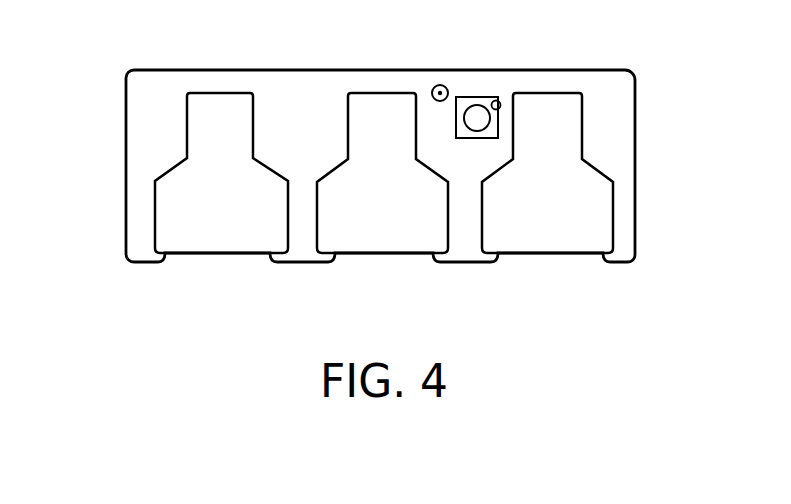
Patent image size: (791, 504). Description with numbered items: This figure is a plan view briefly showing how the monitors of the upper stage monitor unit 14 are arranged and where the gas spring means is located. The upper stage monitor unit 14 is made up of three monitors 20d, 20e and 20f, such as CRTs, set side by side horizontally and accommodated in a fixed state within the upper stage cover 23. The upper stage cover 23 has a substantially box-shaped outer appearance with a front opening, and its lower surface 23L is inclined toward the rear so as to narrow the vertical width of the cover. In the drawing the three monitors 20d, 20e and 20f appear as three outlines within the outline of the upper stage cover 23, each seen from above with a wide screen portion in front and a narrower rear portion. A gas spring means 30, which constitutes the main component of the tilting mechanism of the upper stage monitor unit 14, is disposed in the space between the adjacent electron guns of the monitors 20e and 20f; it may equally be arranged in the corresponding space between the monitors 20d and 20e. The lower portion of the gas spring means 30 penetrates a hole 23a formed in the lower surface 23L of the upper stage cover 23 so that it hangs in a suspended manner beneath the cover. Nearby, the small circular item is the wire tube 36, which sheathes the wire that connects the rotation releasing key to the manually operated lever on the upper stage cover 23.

The upper stage monitor unit 14 is at (112, 79).
The upper stage cover 23 is at (634, 107).
The lower surface of the upper stage cover 23L is at (615, 163).
The hole 23a is at (497, 100).
The gas spring means 30 is at (477, 112).
The wire tube 36 is at (440, 85).
The monitor 20d is at (218, 242).
The monitor 20e is at (390, 242).
The monitor 20f is at (552, 242).